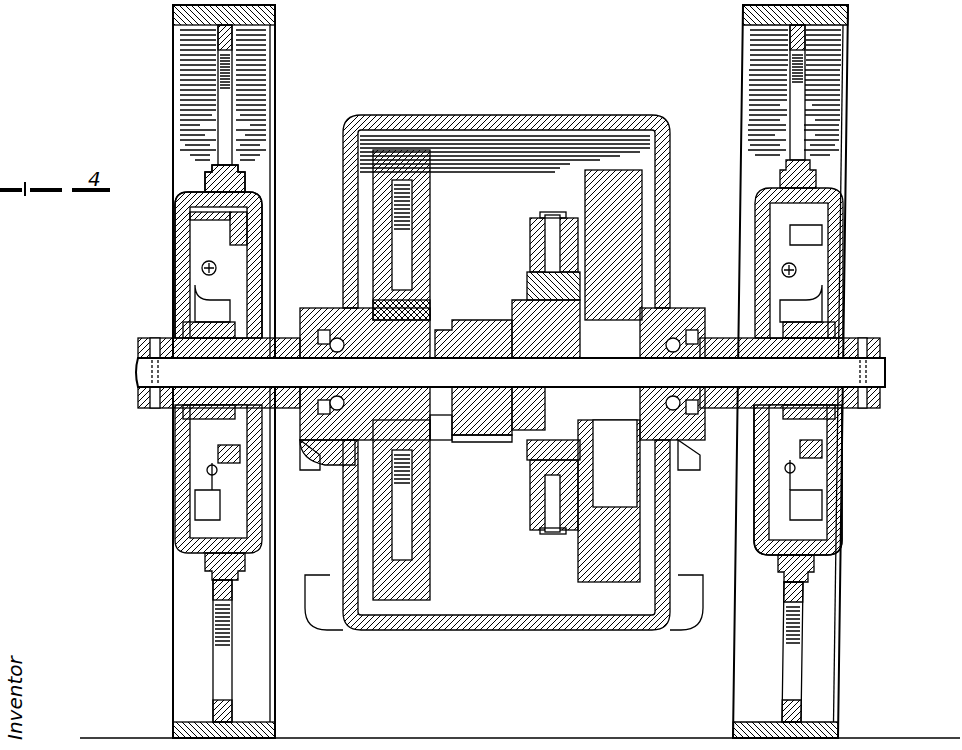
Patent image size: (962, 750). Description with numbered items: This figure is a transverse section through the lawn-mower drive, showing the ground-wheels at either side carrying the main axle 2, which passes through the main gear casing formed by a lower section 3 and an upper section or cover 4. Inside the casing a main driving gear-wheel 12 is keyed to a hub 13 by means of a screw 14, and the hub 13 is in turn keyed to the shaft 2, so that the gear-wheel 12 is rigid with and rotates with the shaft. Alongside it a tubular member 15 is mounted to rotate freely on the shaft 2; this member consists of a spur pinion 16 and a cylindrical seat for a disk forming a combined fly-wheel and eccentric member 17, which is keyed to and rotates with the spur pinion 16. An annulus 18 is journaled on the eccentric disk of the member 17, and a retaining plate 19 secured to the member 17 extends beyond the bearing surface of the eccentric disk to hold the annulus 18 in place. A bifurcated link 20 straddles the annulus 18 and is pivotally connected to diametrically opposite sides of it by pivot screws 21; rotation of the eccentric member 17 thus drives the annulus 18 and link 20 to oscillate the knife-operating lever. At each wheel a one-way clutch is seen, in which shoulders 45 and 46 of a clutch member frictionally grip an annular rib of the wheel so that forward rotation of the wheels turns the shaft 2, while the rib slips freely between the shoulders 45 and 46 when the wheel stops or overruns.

The main axle 2 is at (885, 372).
The lower section 3 is at (500, 630).
The upper section or cover 4 is at (510, 115).
The main driving gear-wheel 12 is at (430, 190).
The hub 13 is at (440, 320).
The screw 14 is at (415, 290).
The tubular member 15 is at (505, 435).
The spur pinion 16 is at (462, 440).
The combined fly-wheel and eccentric member 17 is at (520, 430).
The annulus 18 is at (527, 460).
The retaining plate 19 is at (527, 295).
The bifurcated link 20 is at (530, 245).
The pivot screws 21 is at (548, 212).
The shoulder 45 is at (262, 205).
The shoulder 46 is at (236, 240).